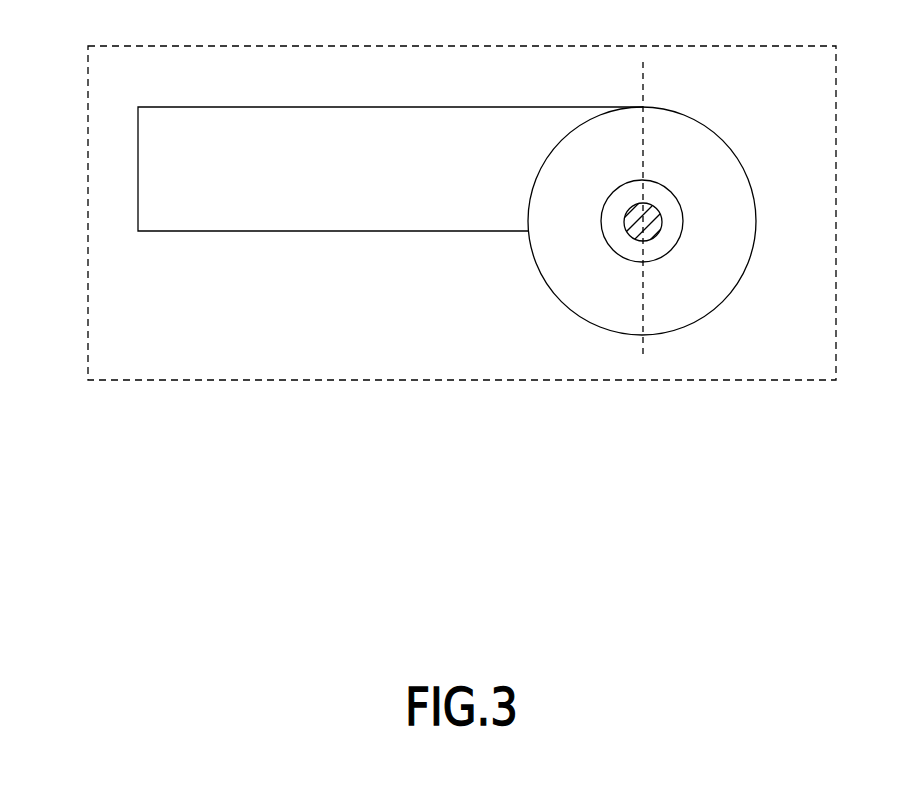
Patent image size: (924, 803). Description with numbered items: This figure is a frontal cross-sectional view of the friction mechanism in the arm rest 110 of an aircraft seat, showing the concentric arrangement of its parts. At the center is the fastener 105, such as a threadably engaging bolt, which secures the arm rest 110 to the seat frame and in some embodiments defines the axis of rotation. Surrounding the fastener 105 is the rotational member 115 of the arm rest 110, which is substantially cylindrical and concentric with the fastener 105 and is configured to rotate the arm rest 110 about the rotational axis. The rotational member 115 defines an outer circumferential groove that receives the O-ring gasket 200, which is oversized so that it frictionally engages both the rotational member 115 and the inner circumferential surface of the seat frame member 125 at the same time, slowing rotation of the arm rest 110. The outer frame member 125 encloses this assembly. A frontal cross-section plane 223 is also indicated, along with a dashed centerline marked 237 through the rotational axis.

The fastener 105 is at (656, 235).
The arm rest 110 is at (332, 107).
The rotational member 115 is at (677, 207).
The seat frame member 125 is at (695, 310).
The O-ring gasket 200 is at (667, 186).
The frontal cross-section plane 223 is at (836, 80).
The central axis 237 is at (641, 101).